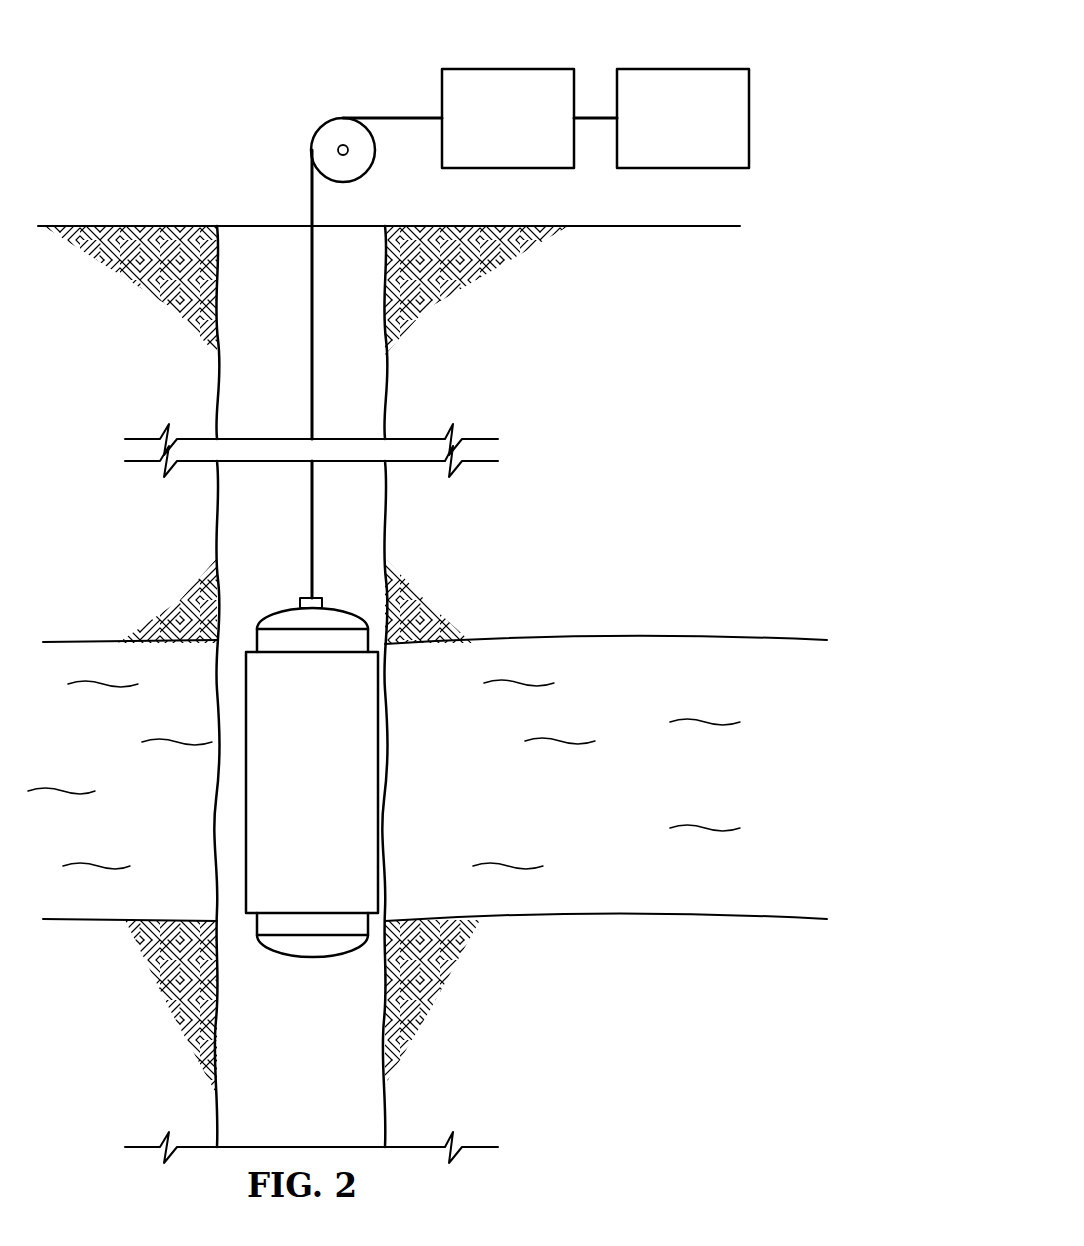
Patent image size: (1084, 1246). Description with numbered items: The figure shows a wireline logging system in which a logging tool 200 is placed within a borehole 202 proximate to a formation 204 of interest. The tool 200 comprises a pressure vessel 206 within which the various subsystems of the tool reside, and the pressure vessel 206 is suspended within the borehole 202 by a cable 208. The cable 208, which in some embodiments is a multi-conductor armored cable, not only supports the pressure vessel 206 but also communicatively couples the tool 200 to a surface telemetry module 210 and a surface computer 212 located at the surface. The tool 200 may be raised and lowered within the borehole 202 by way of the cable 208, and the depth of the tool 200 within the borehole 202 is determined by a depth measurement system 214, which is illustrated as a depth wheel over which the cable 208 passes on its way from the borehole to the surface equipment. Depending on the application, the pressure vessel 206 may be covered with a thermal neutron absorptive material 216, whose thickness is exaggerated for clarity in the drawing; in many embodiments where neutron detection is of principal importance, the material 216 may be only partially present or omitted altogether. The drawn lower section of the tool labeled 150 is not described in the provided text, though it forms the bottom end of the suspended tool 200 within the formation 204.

The lower tool section / sensor sub 150 is at (308, 957).
The logging tool 200 is at (310, 756).
The borehole 202 is at (246, 238).
The formation 204 is at (555, 797).
The pressure vessel 206 is at (280, 612).
The cable 208 is at (311, 333).
The surface telemetry module 210 is at (507, 68).
The surface computer 212 is at (680, 68).
The depth measurement system 214 is at (321, 126).
The thermal neutron absorptive material 216 is at (340, 797).